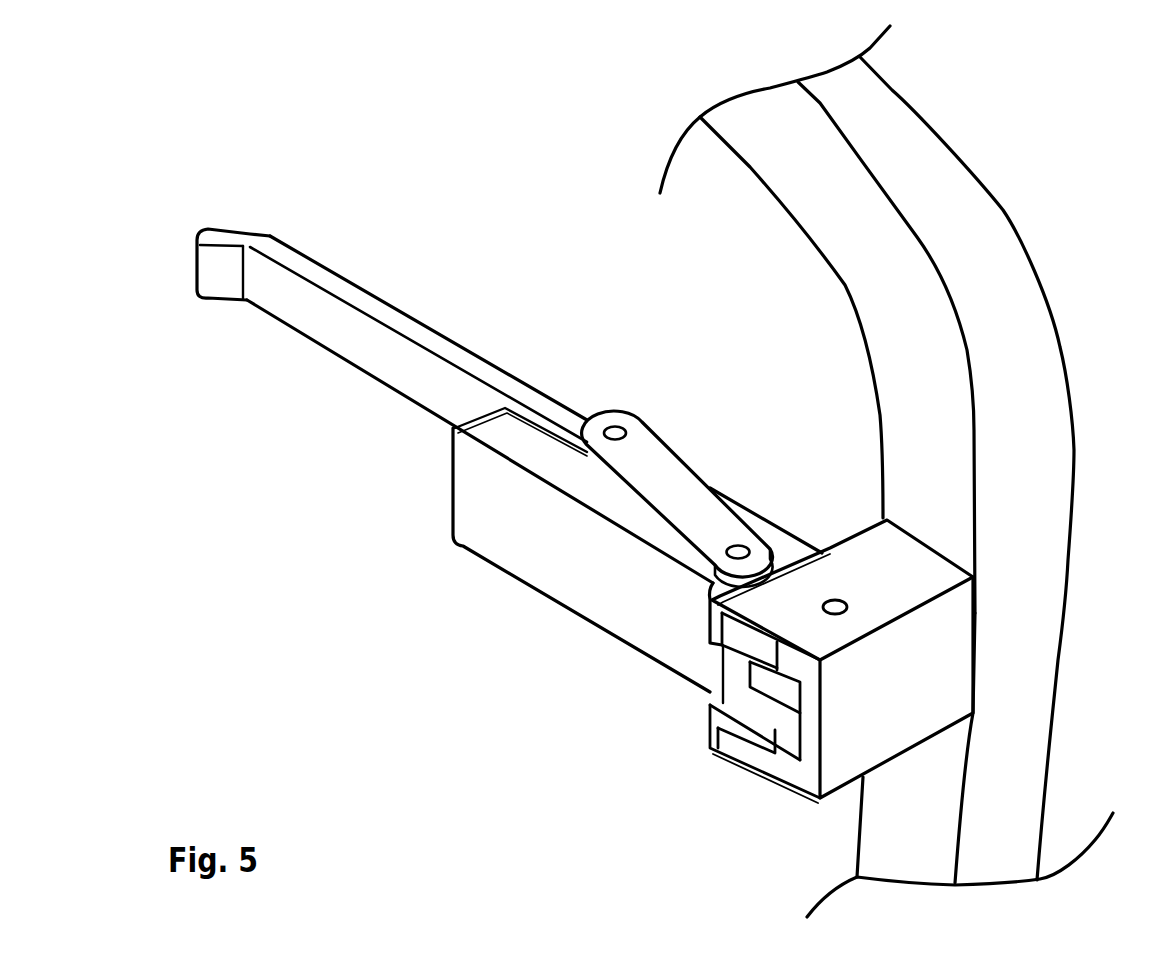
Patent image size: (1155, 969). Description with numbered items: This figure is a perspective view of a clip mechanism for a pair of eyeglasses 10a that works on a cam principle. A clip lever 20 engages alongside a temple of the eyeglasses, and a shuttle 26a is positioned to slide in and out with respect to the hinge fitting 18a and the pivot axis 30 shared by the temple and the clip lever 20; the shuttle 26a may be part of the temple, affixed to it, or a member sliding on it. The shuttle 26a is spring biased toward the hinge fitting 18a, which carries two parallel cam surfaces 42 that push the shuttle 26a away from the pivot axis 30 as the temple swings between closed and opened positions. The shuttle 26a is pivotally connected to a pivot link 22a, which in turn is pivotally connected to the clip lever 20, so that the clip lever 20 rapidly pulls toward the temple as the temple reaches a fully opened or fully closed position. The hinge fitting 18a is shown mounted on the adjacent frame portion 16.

The pair of eyeglasses 10a is at (946, 121).
The frame rail 16 is at (917, 293).
The hinge fitting 18a is at (790, 661).
The clip lever 20 is at (348, 297).
The pivot link 22a is at (660, 457).
The shuttle 26a is at (505, 553).
The pivot axis 30 is at (842, 598).
The cam surfaces 42 is at (710, 643).